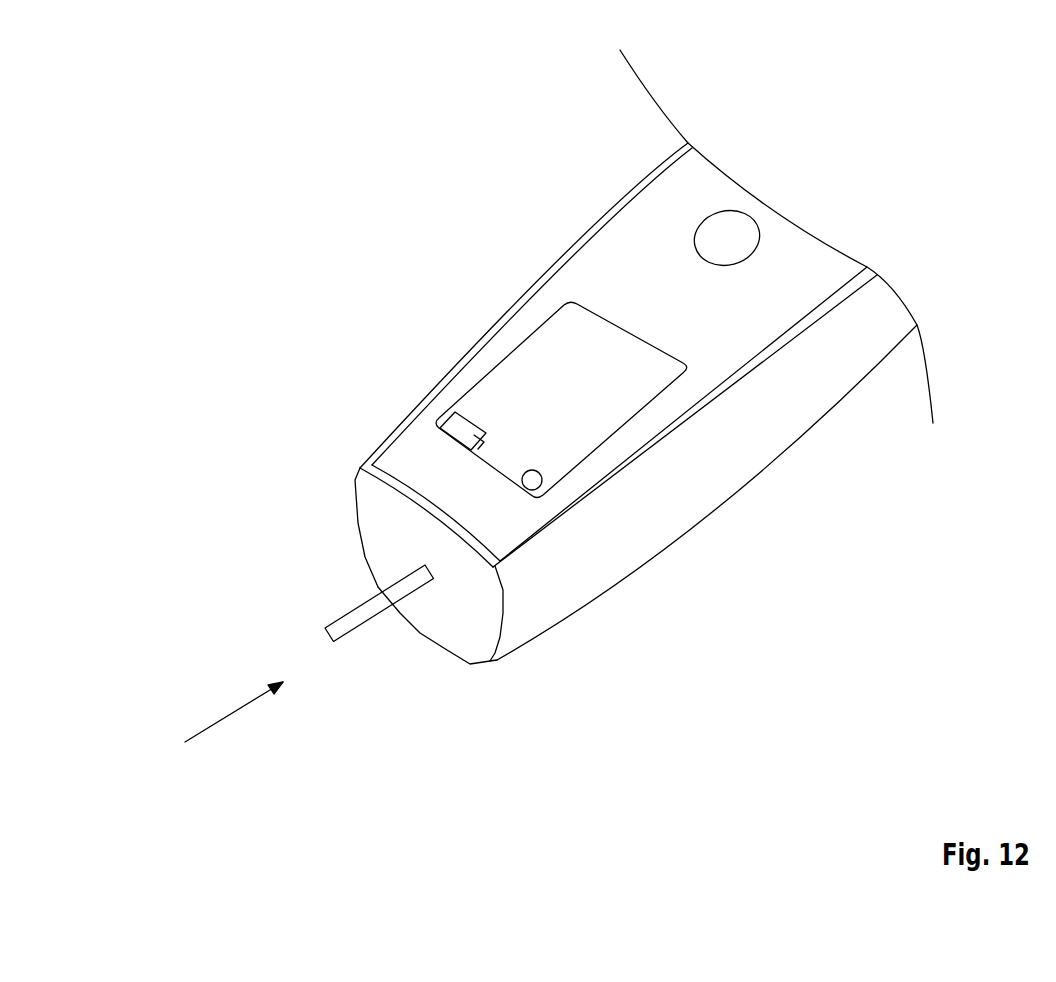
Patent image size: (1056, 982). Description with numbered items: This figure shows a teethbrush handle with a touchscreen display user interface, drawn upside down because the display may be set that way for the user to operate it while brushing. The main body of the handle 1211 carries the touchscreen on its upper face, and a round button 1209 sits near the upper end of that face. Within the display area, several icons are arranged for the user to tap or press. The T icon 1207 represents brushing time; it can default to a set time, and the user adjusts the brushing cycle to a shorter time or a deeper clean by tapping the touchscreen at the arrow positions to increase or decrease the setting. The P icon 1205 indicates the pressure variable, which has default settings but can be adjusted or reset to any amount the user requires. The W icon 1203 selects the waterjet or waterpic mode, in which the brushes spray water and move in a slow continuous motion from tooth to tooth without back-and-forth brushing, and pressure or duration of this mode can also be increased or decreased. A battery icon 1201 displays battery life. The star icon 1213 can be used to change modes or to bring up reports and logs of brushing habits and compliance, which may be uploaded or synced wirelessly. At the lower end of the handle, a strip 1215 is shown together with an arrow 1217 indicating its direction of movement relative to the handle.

The battery icon 1201 is at (440, 428).
The W icon 1203 is at (512, 415).
The P icon 1205 is at (548, 378).
The T icon 1207 is at (600, 327).
The button 1209 is at (712, 228).
The housing 1211 is at (750, 428).
The star icon 1213 is at (543, 481).
The test strip 1215 is at (348, 615).
The insertion direction arrow 1217 is at (247, 700).